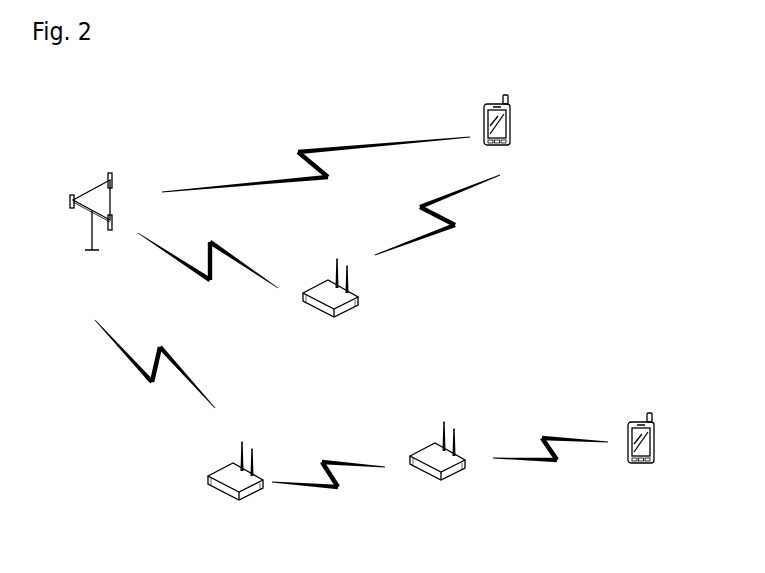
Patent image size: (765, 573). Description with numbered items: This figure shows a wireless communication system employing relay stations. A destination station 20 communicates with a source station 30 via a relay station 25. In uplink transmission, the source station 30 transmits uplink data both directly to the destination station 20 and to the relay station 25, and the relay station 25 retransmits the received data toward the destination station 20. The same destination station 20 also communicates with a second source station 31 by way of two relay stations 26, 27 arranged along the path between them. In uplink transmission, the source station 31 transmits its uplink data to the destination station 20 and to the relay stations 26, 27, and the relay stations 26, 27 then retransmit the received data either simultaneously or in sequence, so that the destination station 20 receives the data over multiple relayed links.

The destination station 20 is at (101, 178).
The relay station 25 is at (320, 283).
The relay station 26 is at (227, 465).
The relay station 27 is at (428, 443).
The source station 30 is at (512, 109).
The source station 31 is at (657, 428).